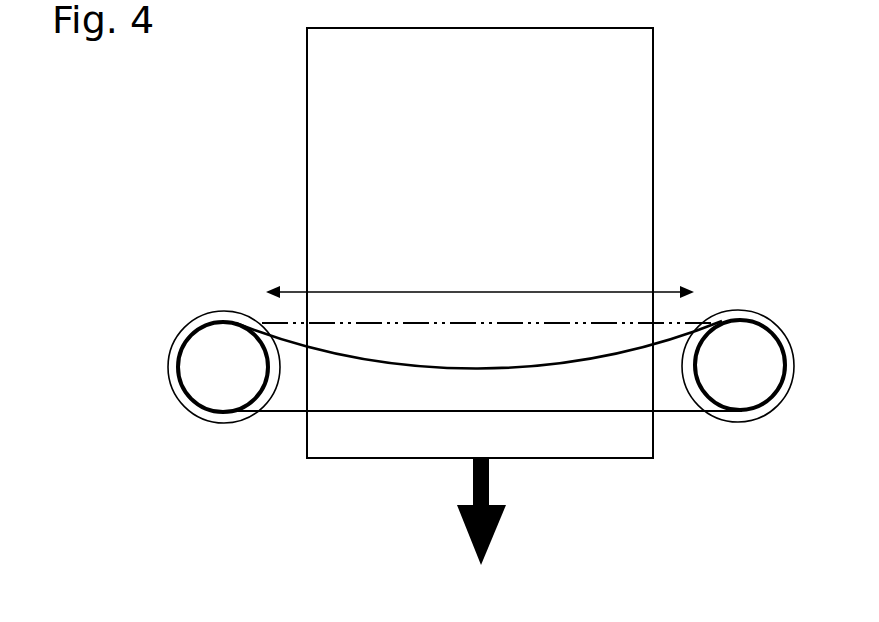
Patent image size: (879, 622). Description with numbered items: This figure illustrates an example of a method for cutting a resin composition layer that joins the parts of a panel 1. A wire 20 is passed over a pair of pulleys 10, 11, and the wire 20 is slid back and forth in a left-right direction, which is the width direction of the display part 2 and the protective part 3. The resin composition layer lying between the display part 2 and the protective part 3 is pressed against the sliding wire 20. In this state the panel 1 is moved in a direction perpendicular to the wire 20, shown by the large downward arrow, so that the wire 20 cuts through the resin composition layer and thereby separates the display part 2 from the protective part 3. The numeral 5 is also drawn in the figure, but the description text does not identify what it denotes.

The panel 1 is at (527, 243).
The display part 2 is at (527, 243).
The protective part 3 is at (654, 136).
The internal unit 5 is at (619, 207).
The pulley 10 is at (763, 339).
The pulley 11 is at (201, 344).
The wire 20 is at (688, 324).